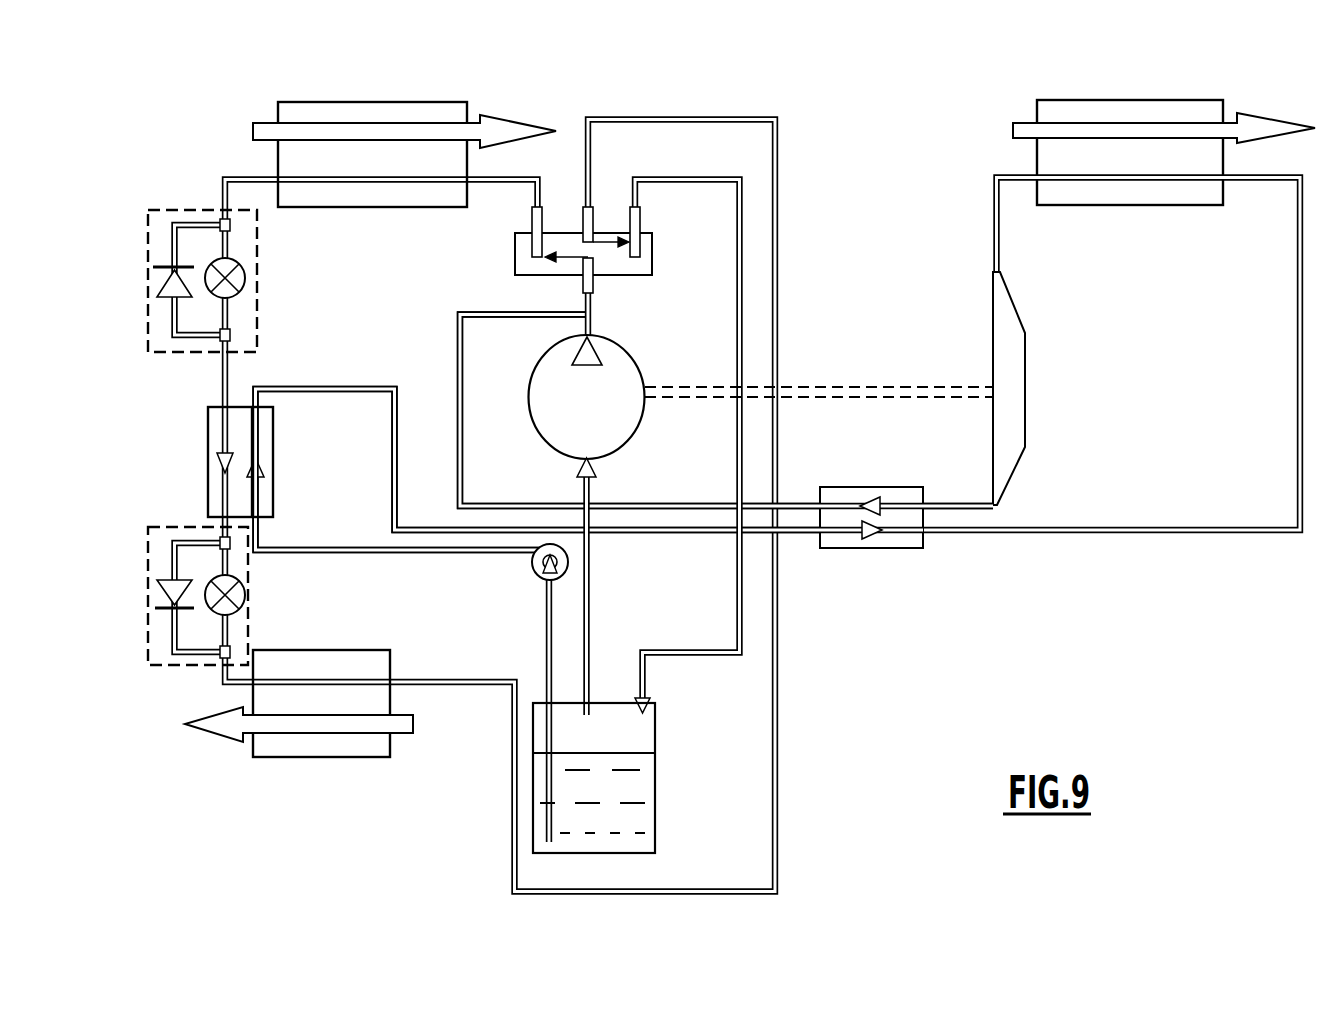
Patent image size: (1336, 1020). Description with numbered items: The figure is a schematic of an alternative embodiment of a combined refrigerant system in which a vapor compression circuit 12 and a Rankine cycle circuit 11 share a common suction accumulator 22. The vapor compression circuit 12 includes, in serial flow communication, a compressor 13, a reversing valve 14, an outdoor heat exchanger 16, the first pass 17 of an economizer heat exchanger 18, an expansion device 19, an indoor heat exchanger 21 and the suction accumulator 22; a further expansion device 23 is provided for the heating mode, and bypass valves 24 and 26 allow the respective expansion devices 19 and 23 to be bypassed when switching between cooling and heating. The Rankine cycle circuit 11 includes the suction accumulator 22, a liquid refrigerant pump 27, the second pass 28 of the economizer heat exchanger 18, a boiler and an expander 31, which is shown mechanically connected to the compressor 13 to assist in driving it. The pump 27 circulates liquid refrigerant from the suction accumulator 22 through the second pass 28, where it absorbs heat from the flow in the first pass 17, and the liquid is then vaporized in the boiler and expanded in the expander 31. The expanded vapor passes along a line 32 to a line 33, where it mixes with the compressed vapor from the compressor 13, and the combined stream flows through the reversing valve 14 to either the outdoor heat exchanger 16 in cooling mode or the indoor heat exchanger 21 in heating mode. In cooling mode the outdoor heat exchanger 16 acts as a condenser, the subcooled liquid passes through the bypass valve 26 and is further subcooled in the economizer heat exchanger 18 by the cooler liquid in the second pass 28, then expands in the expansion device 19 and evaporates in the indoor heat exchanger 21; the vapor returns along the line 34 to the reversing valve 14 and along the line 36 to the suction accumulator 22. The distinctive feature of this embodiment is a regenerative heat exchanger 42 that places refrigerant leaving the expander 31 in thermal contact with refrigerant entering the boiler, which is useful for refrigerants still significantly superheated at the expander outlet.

The Rankine cycle circuit 11 is at (1111, 317).
The vapor compression circuit 12 is at (555, 506).
The compressor 13 is at (627, 370).
The reversing valve 14 is at (645, 248).
The outdoor heat exchanger 16 is at (386, 114).
The first pass of the economizer heat exchanger 17 is at (215, 430).
The economizer heat exchanger 18 is at (285, 479).
The expansion device 19 is at (245, 594).
The indoor heat exchanger 21 is at (368, 665).
The suction accumulator 22 is at (656, 735).
The expansion device 23 is at (240, 277).
The bypass valve 24 is at (157, 597).
The bypass valve 26 is at (156, 283).
The liquid refrigerant pump 27 is at (535, 566).
The second pass of the economizer heat exchanger 28 is at (273, 432).
The expander 31 is at (1019, 361).
The line 32 is at (655, 504).
The line 33 is at (591, 323).
The line 34 is at (779, 668).
The line 36 is at (779, 229).
The regenerative heat exchanger 42 is at (887, 550).